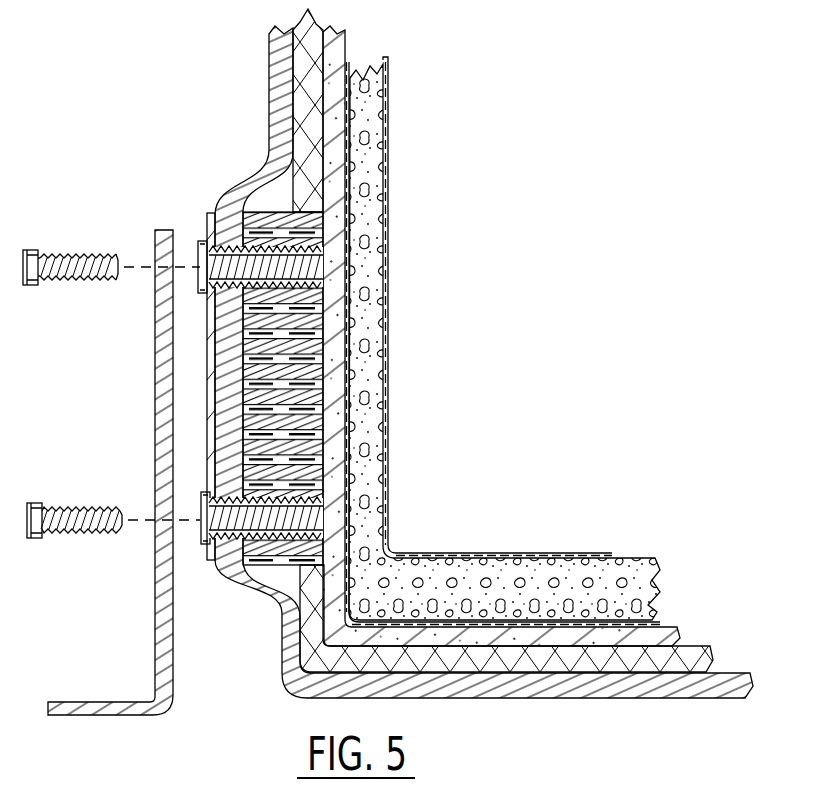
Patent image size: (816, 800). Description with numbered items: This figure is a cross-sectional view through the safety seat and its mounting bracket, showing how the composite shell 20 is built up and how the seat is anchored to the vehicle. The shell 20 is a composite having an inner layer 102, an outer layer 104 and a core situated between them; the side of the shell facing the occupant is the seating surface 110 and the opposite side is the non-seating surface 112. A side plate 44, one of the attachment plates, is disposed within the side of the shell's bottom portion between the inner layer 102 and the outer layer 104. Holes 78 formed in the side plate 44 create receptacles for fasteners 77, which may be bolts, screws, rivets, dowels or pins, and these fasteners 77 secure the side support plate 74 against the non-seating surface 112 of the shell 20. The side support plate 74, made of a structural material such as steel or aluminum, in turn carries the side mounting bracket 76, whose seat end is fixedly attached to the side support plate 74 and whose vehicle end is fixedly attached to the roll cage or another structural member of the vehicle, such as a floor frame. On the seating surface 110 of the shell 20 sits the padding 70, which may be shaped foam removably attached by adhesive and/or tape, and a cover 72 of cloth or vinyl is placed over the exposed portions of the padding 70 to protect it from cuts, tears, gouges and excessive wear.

The shell 20 is at (248, 84).
The side plate 44 is at (350, 411).
The padding 70 is at (368, 285).
The cover 72 is at (389, 216).
The side support plate 74 is at (212, 213).
The side mounting bracket 76 is at (157, 620).
The fasteners 77 is at (33, 503).
The holes 78 is at (290, 510).
The inner layer 102 is at (648, 633).
The outer layer 104 is at (568, 688).
The seating surface 110 is at (344, 46).
The non-seating surface 112 is at (270, 53).